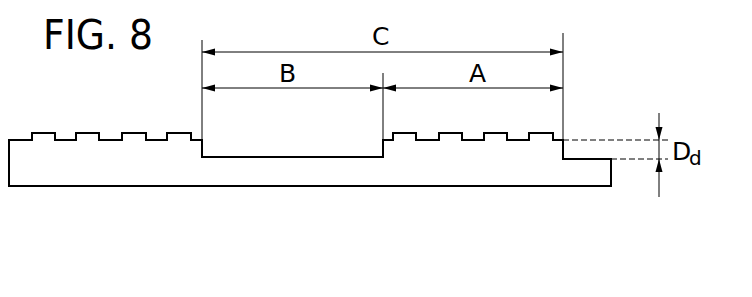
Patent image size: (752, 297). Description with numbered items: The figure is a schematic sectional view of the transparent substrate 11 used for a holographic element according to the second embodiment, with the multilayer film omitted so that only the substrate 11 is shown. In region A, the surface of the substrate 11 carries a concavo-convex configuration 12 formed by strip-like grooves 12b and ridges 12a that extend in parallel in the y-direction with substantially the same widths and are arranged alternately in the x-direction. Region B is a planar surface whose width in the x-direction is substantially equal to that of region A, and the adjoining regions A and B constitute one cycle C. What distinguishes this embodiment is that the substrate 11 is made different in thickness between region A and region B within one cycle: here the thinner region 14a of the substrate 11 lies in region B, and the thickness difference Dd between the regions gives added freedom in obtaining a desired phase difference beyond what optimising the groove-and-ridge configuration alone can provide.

The transparent substrate 11 is at (499, 179).
The concavo-convex configuration 12 is at (175, 224).
The ridges 12a is at (87, 133).
The grooves 12b is at (115, 140).
The thinner region 14a is at (327, 157).